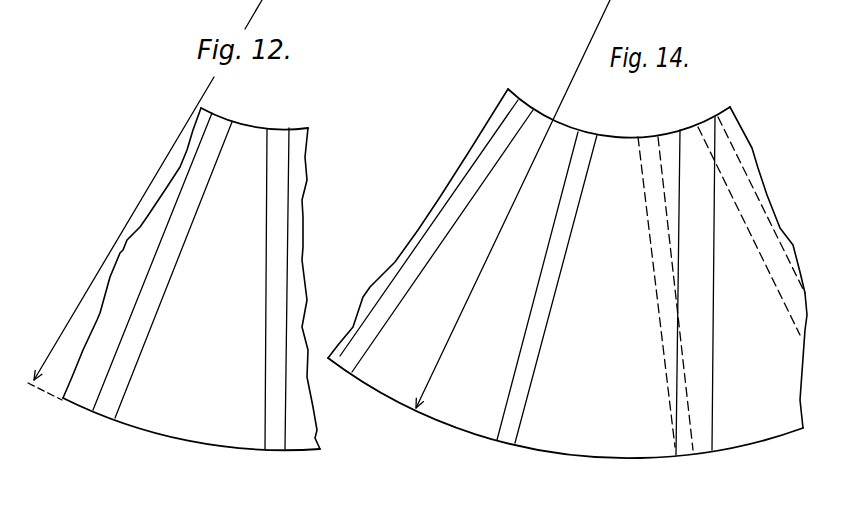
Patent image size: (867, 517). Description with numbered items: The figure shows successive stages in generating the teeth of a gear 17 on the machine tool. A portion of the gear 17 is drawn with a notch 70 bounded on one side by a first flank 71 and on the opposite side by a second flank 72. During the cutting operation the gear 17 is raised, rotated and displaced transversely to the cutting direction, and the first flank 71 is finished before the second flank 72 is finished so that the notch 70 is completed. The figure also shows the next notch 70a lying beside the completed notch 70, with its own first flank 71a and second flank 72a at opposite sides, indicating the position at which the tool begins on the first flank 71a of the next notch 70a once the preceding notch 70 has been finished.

In FIG. 12, the gear 17 is at (316, 443).
In FIG. 14, the gear 17 is at (495, 124).
In FIG. 12, the notch 70 is at (162, 428).
In FIG. 14, the notch 70 is at (473, 427).
In FIG. 12, the first flank 71 is at (150, 292).
In FIG. 14, the first flank 71 is at (528, 121).
In FIG. 12, the second flank 72 is at (286, 253).
In FIG. 14, the second flank 72 is at (594, 137).
In FIG. 14, the next notch 70a is at (752, 440).
In FIG. 14, the first flank of next notch 71a is at (663, 326).
In FIG. 14, the second flank of next notch 72a is at (758, 210).